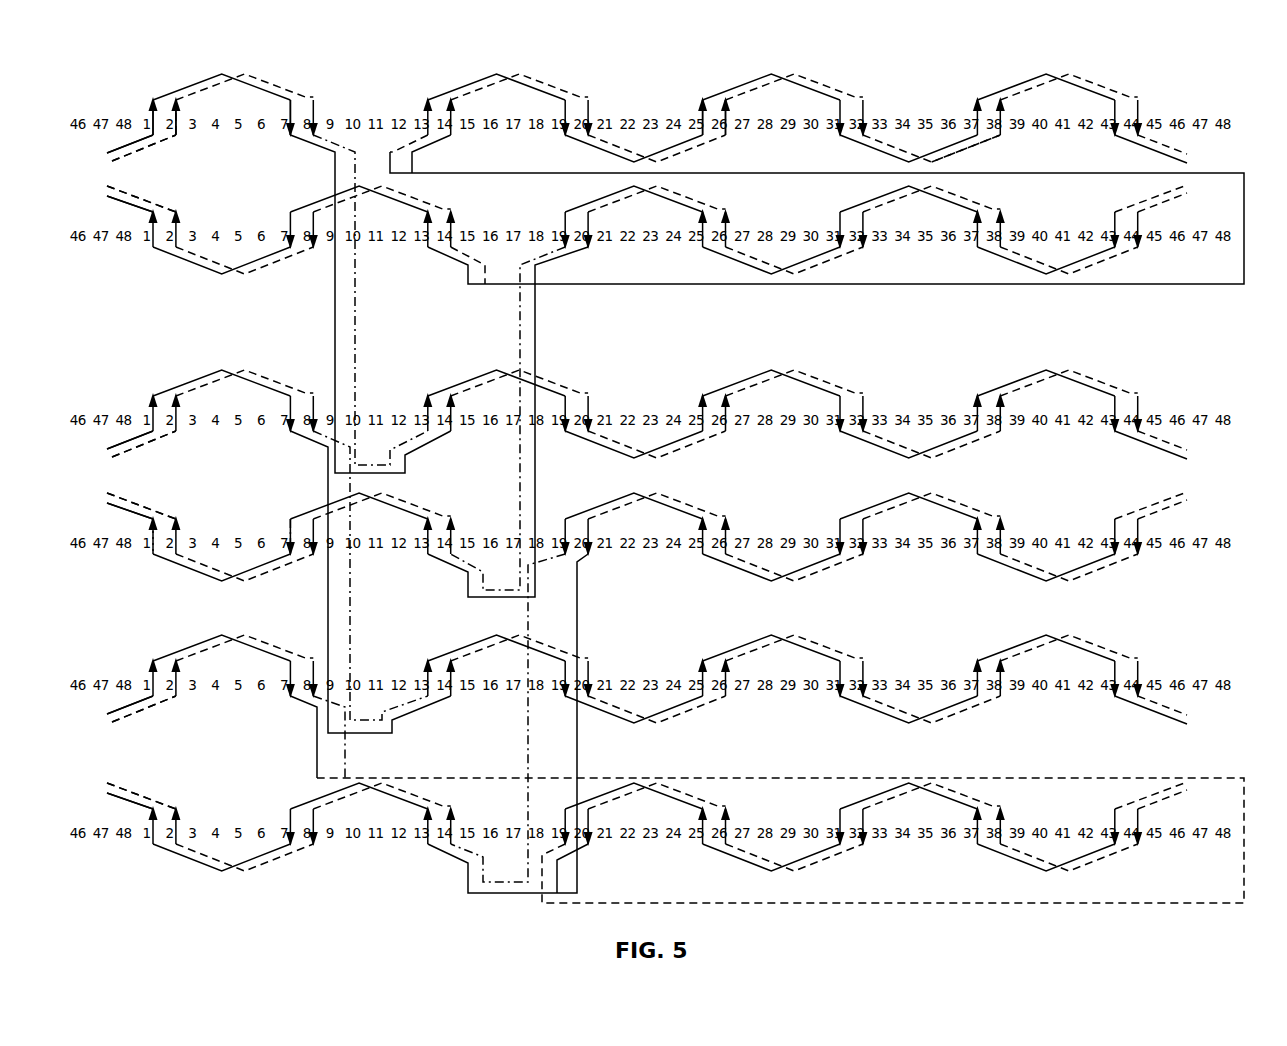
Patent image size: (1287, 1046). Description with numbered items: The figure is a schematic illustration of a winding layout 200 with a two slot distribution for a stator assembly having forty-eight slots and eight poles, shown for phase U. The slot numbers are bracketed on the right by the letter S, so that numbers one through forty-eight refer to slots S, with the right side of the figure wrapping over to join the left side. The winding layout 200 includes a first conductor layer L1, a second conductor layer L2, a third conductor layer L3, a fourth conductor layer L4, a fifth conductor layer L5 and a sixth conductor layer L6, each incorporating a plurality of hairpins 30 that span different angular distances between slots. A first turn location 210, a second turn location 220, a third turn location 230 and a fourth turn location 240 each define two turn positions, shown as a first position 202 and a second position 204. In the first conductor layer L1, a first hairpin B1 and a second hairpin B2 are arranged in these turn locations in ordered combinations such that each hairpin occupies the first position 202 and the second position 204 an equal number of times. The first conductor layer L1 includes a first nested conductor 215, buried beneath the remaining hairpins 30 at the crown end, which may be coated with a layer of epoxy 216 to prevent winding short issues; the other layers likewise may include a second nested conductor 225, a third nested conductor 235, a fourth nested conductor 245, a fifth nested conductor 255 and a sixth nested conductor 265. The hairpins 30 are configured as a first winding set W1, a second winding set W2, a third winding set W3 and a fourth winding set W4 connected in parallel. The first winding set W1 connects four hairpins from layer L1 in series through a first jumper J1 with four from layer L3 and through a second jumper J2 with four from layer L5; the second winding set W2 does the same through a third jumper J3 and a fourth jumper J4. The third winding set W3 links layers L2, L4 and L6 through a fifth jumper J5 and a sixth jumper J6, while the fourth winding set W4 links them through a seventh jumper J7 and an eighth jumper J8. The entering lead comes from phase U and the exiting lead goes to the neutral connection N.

The winding layout 200 is at (110, 98).
The first turn location 210 is at (236, 74).
The second turn location 220 is at (510, 74).
The first position 202 is at (698, 104).
The second position 204 is at (728, 100).
The third turn location 230 is at (792, 72).
The first nested conductor 215 is at (882, 138).
The layer of epoxy 216 is at (944, 152).
The fourth turn location 240 is at (1060, 74).
The second nested conductor 225 is at (1030, 256).
The hairpins 30 is at (1105, 362).
The third nested conductor 235 is at (883, 445).
The fourth nested conductor 245 is at (1020, 556).
The fifth nested conductor 255 is at (885, 708).
The sixth nested conductor 265 is at (1018, 852).
The first conductor layer L1 is at (90, 160).
The second conductor layer L2 is at (118, 258).
The third conductor layer L3 is at (92, 463).
The fourth conductor layer L4 is at (128, 578).
The fifth conductor layer L5 is at (80, 708).
The sixth conductor layer L6 is at (128, 868).
The first jumper J1 is at (358, 345).
The second jumper J2 is at (352, 608).
The third jumper J3 is at (333, 300).
The fourth jumper J4 is at (326, 620).
The fifth jumper J5 is at (538, 316).
The sixth jumper J6 is at (578, 615).
The seventh jumper J7 is at (518, 465).
The eighth jumper J8 is at (526, 730).
The first winding set W1 is at (306, 94).
The second winding set W2 is at (180, 82).
The third winding set W3 is at (706, 207).
The fourth winding set W4 is at (575, 207).
The first hairpin B1 is at (108, 152).
The second hairpin B2 is at (170, 138).
The slots S is at (1256, 478).
The phase U is at (1283, 272).
The neutral connection N is at (1283, 890).